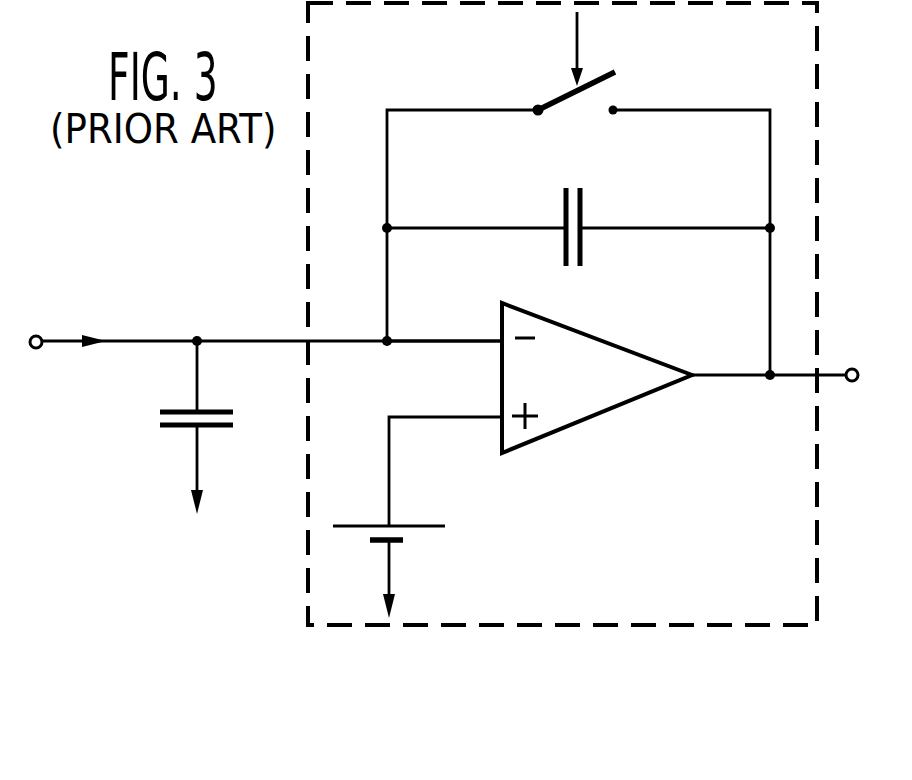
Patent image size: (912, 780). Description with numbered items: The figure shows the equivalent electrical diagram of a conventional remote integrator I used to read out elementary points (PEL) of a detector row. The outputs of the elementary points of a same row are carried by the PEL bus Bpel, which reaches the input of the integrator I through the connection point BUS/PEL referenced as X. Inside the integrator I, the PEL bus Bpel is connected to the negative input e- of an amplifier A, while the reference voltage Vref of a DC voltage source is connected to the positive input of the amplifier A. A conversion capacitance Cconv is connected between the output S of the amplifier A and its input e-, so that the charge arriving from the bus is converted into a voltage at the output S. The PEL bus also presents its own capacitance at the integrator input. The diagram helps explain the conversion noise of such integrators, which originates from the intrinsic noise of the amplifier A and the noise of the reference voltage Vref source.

The PEL bus Bpel is at (70, 340).
The connection point BUS/PEL X is at (197, 340).
The conversion capacitance Cconv is at (583, 208).
The amplifier A is at (596, 397).
The negative input e- is at (488, 317).
The reference voltage Vref is at (429, 572).
The output S is at (773, 390).
The integrator I is at (818, 573).